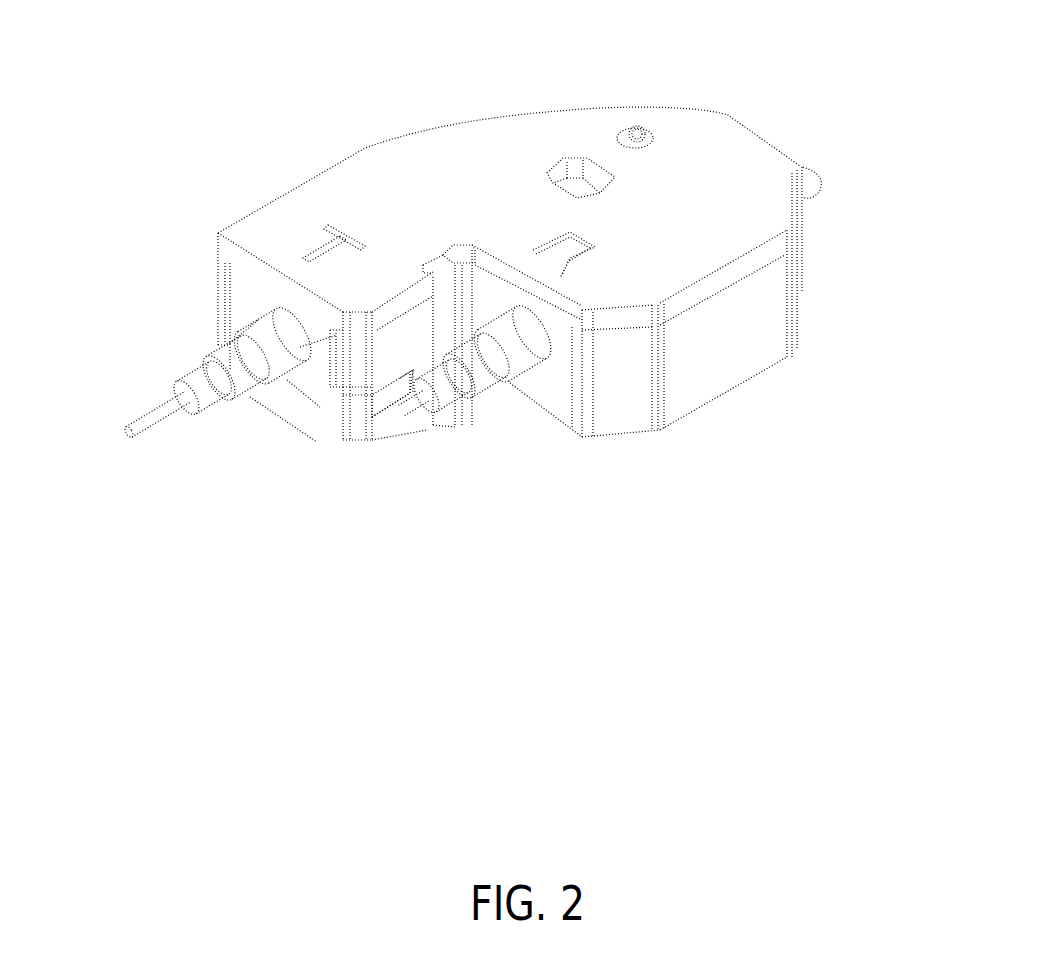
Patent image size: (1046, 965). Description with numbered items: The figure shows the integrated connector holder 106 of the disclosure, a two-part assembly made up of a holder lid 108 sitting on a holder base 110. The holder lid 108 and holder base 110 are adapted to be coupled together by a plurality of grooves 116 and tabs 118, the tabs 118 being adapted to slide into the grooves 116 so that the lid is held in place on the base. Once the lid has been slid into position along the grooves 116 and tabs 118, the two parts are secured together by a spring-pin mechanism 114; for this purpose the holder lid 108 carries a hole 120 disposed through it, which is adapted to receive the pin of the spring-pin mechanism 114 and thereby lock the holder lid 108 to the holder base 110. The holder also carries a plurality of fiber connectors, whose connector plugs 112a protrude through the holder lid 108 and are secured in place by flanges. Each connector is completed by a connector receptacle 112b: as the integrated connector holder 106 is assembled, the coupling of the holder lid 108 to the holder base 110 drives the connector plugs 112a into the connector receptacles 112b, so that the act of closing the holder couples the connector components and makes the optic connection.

The integrated connector holder 106 is at (500, 274).
The holder lid 108 is at (510, 237).
The holder base 110 is at (679, 418).
The connector plugs 112a is at (329, 416).
The connector receptacles 112b is at (880, 169).
The spring-pin mechanism 114 is at (599, 87).
The grooves 116 is at (344, 259).
The tabs 118 is at (305, 460).
The hole 120 is at (719, 108).